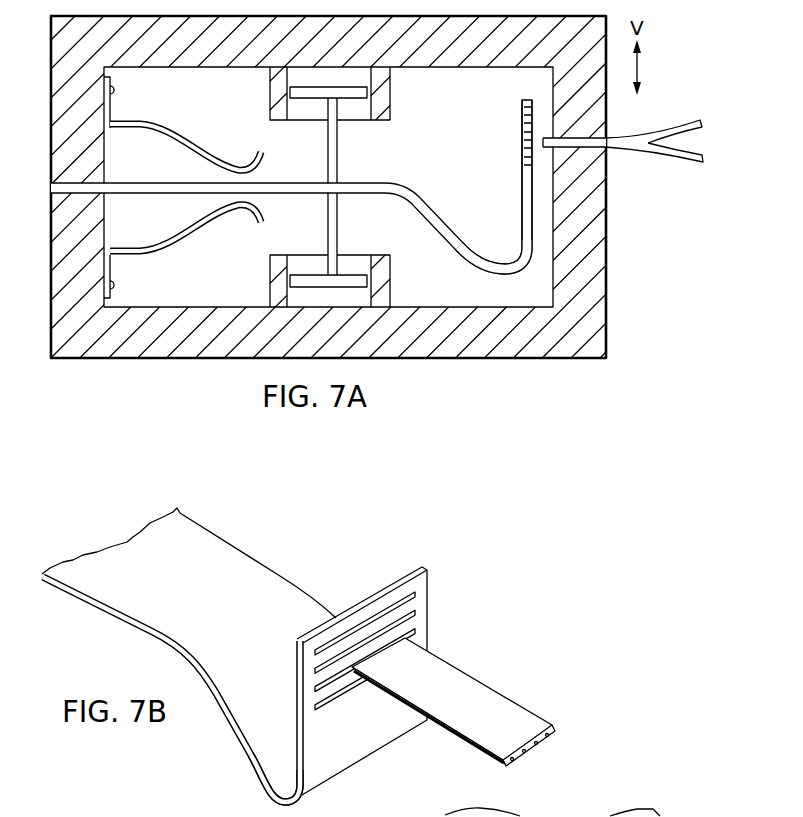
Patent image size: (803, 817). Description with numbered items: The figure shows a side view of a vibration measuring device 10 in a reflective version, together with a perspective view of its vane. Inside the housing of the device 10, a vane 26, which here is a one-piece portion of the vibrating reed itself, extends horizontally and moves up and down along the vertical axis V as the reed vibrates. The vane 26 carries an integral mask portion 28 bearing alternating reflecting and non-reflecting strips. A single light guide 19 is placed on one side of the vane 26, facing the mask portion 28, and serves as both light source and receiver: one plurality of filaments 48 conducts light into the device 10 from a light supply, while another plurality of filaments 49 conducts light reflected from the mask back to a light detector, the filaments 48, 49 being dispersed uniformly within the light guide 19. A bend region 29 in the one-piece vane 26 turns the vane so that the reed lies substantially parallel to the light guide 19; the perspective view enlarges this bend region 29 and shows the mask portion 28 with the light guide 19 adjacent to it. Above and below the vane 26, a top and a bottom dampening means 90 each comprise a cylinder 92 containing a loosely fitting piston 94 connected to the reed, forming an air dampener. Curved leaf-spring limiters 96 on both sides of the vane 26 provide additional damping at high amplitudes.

In FIG. 7A, the vibration measuring device 10 is at (644, 344).
In FIG. 7A, the light guide 19 is at (613, 148).
In FIG. 7B, the light guide 19 is at (476, 677).
In FIG. 7A, the vane 26 is at (393, 182).
In FIG. 7B, the vane 26 is at (257, 552).
In FIG. 7A, the mask portion 28 is at (523, 103).
In FIG. 7B, the mask portion 28 is at (428, 604).
In FIG. 7A, the bend region 29 is at (484, 267).
In FIG. 7B, the bend region 29 is at (265, 787).
In FIG. 7A, the filaments 48 is at (682, 125).
In FIG. 7A, the filaments 49 is at (675, 158).
In FIG. 7A, the dampening means 90 is at (391, 93).
In FIG. 7A, the cylinder 92 is at (306, 121).
In FIG. 7A, the piston 94 is at (352, 96).
In FIG. 7A, the limiter 96 is at (204, 150).